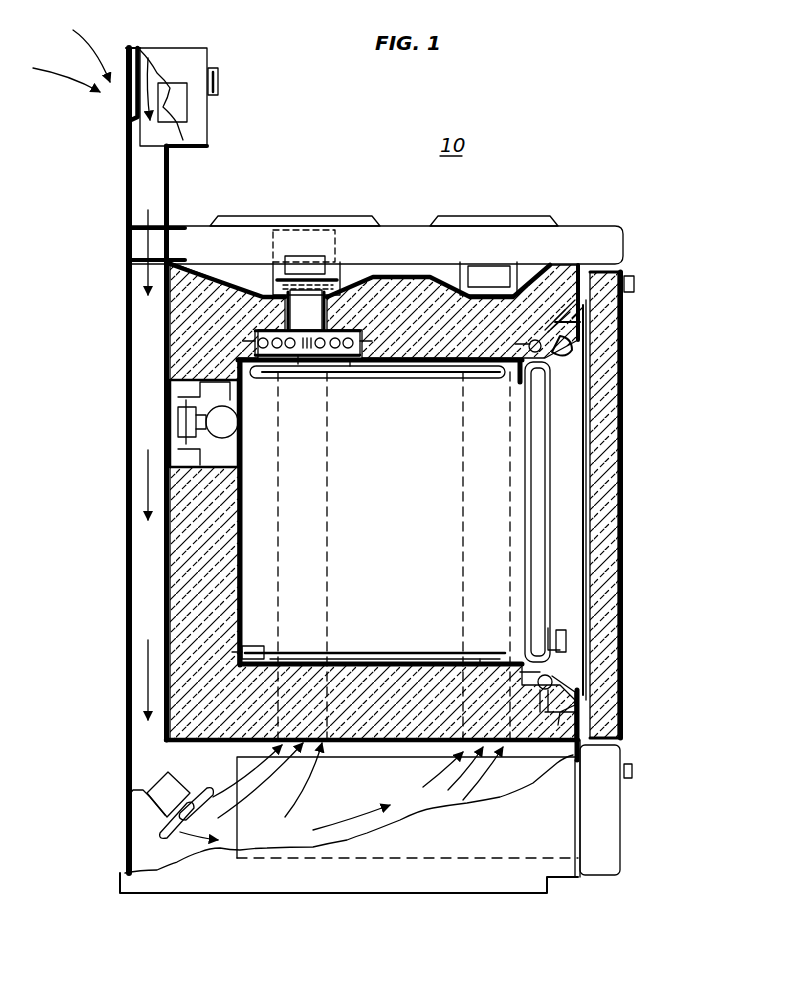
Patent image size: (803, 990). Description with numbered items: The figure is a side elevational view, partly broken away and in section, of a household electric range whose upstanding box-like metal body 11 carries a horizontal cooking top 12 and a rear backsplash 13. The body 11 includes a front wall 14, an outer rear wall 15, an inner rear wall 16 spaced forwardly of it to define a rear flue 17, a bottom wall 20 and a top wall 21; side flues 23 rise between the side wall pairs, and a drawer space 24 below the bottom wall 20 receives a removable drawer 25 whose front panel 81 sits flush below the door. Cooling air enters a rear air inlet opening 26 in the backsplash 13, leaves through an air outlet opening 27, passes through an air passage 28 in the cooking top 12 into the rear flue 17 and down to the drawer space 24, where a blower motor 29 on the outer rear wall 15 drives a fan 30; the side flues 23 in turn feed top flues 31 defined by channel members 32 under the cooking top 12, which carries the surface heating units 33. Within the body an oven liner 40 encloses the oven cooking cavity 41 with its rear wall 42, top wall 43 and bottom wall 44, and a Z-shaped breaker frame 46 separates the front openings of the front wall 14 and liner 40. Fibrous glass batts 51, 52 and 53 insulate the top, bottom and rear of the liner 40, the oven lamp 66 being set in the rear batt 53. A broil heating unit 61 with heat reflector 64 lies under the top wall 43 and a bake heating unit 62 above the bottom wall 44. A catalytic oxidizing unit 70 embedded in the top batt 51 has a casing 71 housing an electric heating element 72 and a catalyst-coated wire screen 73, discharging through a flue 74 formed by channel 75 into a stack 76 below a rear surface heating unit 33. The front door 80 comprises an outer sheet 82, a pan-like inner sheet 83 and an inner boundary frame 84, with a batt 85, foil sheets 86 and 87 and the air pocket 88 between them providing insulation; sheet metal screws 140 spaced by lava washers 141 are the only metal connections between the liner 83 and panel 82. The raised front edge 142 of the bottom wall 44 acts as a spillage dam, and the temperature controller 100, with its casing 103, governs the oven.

The metal body 11 is at (126, 462).
The cooking top 12 is at (126, 246).
The backsplash 13 is at (126, 172).
The front wall 14 is at (580, 290).
The outer rear wall 15 is at (126, 696).
The inner rear wall 16 is at (165, 582).
The rear flue 17 is at (131, 384).
The bottom wall 20 is at (394, 746).
The top wall 21 is at (400, 278).
The side flues 23 is at (327, 518).
The drawer space 24 is at (208, 774).
The drawer 25 is at (348, 806).
The rear air inlet opening 26 is at (135, 97).
The air outlet opening 27 is at (152, 224).
The air passage 28 is at (160, 248).
The fan or blower motor 29 is at (175, 804).
The fan 30 is at (183, 812).
The top flues 31 is at (303, 268).
The channel members 32 is at (342, 276).
The surface heating units 33 is at (295, 216).
The oven liner 40 is at (246, 608).
The oven cooking cavity 41 is at (398, 554).
The rear wall 42 is at (242, 506).
The top wall 43 is at (402, 378).
The bottom wall 44 is at (388, 664).
The breaker frame 46 is at (582, 344).
The top batt 51 is at (185, 318).
The bottom batt 52 is at (370, 746).
The rear batt 53 is at (185, 622).
The broil electric heating unit 61 is at (442, 378).
The bake electric heating unit 62 is at (343, 652).
The heat reflector 64 is at (358, 372).
The oven lamp 66 is at (236, 424).
The catalytic oxidizing unit 70 is at (348, 330).
The casing 71 is at (298, 358).
The electric heating element 72 is at (268, 332).
The wire screen 73 is at (306, 310).
The flue 74 is at (335, 264).
The channel 75 is at (275, 285).
The stack 76 is at (273, 250).
The front door 80 is at (634, 510).
The front panel 81 is at (610, 830).
The outer sheet 82 is at (620, 614).
The inner sheet 83 is at (527, 480).
The inner boundary frame 84 is at (588, 328).
The door batt 85 is at (605, 568).
The foil sheets 86 is at (583, 452).
The foil sheets 87 is at (548, 578).
The air pocket 88 is at (575, 602).
The temperature controller 100 is at (222, 127).
The casing 103 is at (170, 88).
The sheet metal screws 140 is at (590, 650).
The heat-insulating washers 141 is at (565, 604).
The raised front edge 142 is at (533, 680).